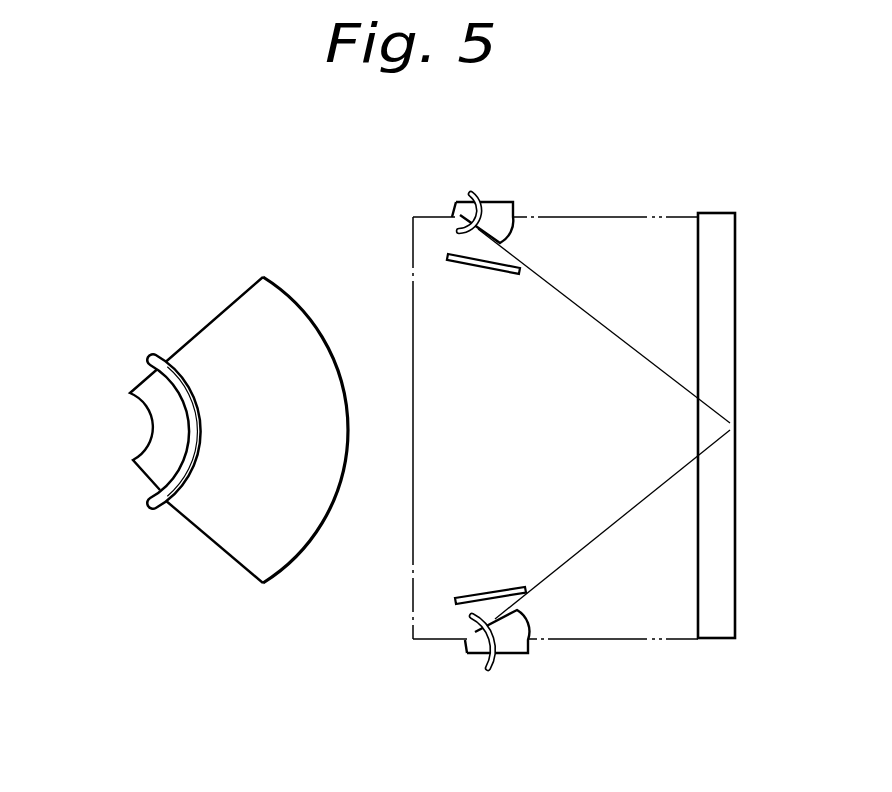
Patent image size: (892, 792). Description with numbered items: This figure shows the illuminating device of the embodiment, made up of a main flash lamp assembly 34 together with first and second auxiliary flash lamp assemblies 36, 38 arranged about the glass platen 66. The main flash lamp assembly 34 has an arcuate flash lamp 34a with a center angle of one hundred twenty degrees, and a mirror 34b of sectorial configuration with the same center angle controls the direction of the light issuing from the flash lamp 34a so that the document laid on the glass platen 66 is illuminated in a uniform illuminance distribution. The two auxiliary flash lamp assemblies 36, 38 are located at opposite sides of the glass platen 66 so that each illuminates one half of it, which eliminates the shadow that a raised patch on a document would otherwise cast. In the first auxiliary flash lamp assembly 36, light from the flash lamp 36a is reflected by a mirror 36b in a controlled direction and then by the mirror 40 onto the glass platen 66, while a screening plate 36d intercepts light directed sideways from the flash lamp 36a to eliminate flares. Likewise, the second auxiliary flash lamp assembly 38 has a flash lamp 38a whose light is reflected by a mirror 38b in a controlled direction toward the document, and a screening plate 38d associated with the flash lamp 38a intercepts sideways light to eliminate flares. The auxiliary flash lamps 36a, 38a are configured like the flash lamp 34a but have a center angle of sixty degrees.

The main flash lamp assembly 34 is at (230, 436).
The flash lamp 34a is at (152, 355).
The mirror 34b is at (229, 322).
The first auxiliary flash lamp assembly 36 is at (499, 634).
The flash lamp 36a is at (483, 670).
The mirror 36b is at (524, 653).
The screening plate 36d is at (472, 595).
The second auxiliary flash lamp assembly 38 is at (507, 226).
The flash lamp 38a is at (477, 187).
The mirror 38b is at (513, 202).
The screening plate 38d is at (462, 259).
The mirror 40 is at (727, 542).
The glass platen 66 is at (410, 606).